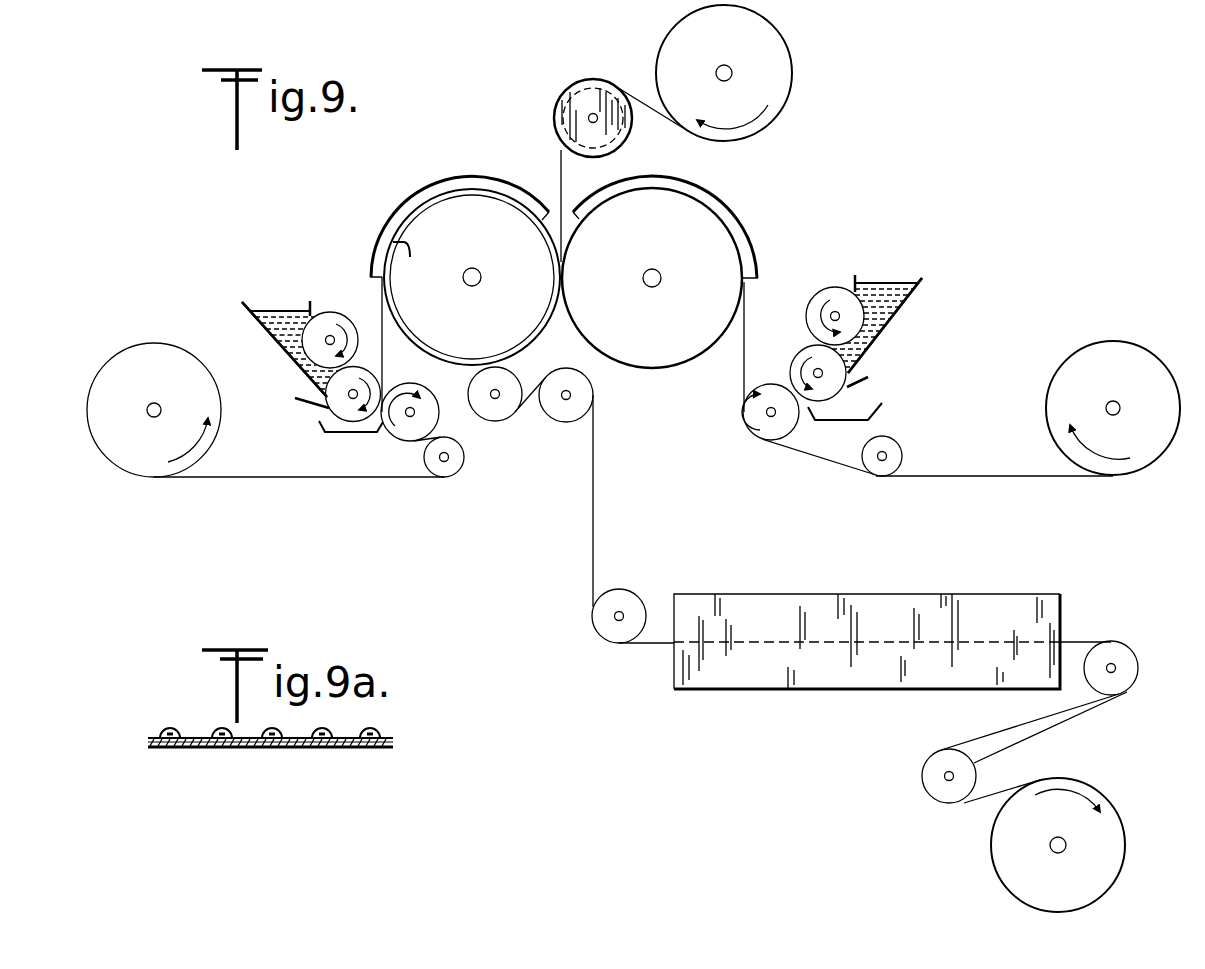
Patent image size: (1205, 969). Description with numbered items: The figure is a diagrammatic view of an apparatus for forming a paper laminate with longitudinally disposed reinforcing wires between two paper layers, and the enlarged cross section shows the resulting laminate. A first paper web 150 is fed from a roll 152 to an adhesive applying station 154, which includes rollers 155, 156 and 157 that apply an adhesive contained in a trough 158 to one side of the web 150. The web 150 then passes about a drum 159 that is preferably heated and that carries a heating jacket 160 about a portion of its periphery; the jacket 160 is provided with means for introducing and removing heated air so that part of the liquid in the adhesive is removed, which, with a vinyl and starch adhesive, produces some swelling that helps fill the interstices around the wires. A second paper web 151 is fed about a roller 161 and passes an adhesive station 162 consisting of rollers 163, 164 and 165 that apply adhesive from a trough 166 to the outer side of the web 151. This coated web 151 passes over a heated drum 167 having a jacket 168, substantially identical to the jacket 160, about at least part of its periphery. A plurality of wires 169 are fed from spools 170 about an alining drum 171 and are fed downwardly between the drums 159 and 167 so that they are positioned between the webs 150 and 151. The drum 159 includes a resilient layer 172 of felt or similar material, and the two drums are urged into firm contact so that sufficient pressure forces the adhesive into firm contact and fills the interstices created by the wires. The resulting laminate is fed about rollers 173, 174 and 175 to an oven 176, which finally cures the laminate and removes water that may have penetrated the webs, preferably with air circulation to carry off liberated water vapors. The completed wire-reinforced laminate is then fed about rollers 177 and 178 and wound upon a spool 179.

In FIG. 9, the paper web 150 is at (267, 476).
In FIG. 9A, the paper web 150 is at (215, 747).
In FIG. 9, the paper web 151 is at (963, 476).
In FIG. 9A, the paper web 151 is at (370, 733).
In FIG. 9, the roll 152 is at (156, 356).
In FIG. 9, the adhesive applying station 154 is at (290, 290).
In FIG. 9, the roller 155 is at (399, 431).
In FIG. 9, the roller 156 is at (327, 390).
In FIG. 9, the roller 157 is at (331, 312).
In FIG. 9, the trough 158 is at (265, 330).
In FIG. 9, the drum 159 is at (481, 253).
In FIG. 9, the heating jacket 160 is at (458, 176).
In FIG. 9, the roller 161 is at (892, 441).
In FIG. 9, the adhesive station 162 is at (882, 270).
In FIG. 9, the roller 163 is at (757, 434).
In FIG. 9, the roller 164 is at (803, 350).
In FIG. 9, the roller 165 is at (833, 288).
In FIG. 9, the trough 166 is at (902, 307).
In FIG. 9, the heated drum 167 is at (666, 250).
In FIG. 9, the jacket 168 is at (740, 213).
In FIG. 9, the wires 169 is at (661, 117).
In FIG. 9A, the wires 169 is at (317, 748).
In FIG. 9, the spools 170 is at (773, 66).
In FIG. 9, the alining drum 171 is at (599, 80).
In FIG. 9, the resilient layer 172 is at (415, 265).
In FIG. 9, the roller 173 is at (497, 412).
In FIG. 9, the roller 174 is at (562, 414).
In FIG. 9, the roller 175 is at (625, 592).
In FIG. 9, the oven 176 is at (862, 594).
In FIG. 9, the roller 177 is at (1126, 648).
In FIG. 9, the roller 178 is at (968, 763).
In FIG. 9, the spool 179 is at (1112, 820).